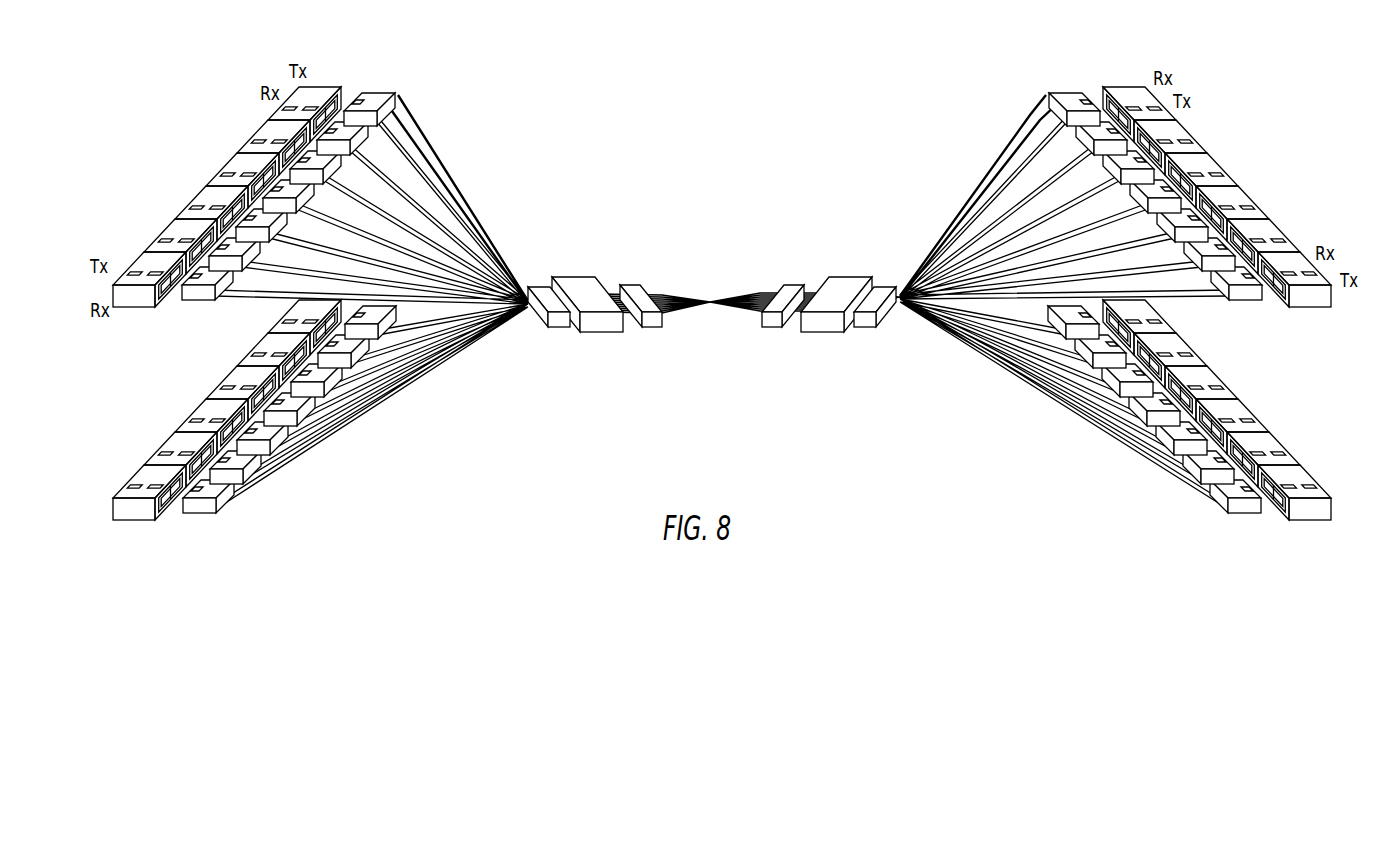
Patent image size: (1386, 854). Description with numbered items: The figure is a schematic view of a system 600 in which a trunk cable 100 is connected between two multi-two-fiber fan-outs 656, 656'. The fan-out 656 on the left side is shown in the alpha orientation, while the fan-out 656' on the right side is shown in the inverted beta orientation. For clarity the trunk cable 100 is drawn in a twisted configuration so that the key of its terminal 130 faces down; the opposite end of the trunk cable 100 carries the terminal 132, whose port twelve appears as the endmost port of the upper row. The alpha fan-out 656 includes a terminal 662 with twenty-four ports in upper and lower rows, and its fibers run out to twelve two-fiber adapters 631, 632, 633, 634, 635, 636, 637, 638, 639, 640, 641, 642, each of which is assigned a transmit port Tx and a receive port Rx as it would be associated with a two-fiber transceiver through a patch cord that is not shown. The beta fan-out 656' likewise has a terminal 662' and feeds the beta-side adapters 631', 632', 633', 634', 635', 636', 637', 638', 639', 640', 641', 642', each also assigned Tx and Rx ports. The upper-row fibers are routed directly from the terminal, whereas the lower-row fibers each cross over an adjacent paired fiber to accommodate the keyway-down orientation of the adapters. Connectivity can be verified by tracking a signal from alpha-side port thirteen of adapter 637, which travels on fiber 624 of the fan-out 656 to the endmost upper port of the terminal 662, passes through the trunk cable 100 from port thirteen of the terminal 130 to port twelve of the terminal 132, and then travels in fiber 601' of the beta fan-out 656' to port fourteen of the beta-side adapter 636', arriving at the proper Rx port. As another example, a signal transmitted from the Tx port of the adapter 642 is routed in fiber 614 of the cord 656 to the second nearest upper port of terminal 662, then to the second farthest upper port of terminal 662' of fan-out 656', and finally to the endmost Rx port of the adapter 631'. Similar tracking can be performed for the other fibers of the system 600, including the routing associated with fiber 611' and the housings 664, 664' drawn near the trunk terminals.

The trunk cable 100 is at (700, 235).
The terminal 130 is at (655, 330).
The terminal 132 is at (790, 290).
The system 600 is at (868, 118).
The fiber 601' is at (1064, 404).
The trunk cable 611' is at (978, 188).
The fiber 614 is at (430, 298).
The fiber 624 is at (428, 155).
The 2-fiber adapter 631 is at (283, 327).
The 2-fiber adapter 632 is at (251, 360).
The 2-fiber adapter 633 is at (221, 392).
The 2-fiber adapter 634 is at (191, 423).
The 2-fiber adapter 635 is at (163, 454).
The 2-fiber adapter 636 is at (135, 487).
The 2-fiber adapter 637 is at (307, 88).
The 2-fiber adapter 638 is at (269, 121).
The 2-fiber adapter 639 is at (238, 152).
The 2-fiber adapter 640 is at (207, 183).
The 2-fiber adapter 641 is at (179, 216).
The 2-fiber adapter 642 is at (149, 248).
The 2-fiber adapter 631' is at (1116, 92).
The 2-fiber adapter 632' is at (1188, 130).
The 2-fiber adapter 633' is at (1222, 163).
The 2-fiber adapter 634' is at (1252, 195).
The 2-fiber adapter 635' is at (1284, 227).
The 2-fiber adapter 636' is at (1310, 257).
The 2-fiber adapter 637' is at (1164, 326).
The 2-fiber adapter 638' is at (1196, 355).
The 2-fiber adapter 639' is at (1223, 385).
The 2-fiber adapter 640' is at (1252, 417).
The 2-fiber adapter 641' is at (1281, 447).
The 2-fiber adapter 642' is at (1312, 482).
The fan-out 656 is at (384, 210).
The fan-out 656' is at (1064, 207).
The terminal 662 is at (549, 343).
The terminal 662' is at (845, 330).
The furcation housing 664 is at (587, 279).
The furcation housing 664' is at (857, 286).